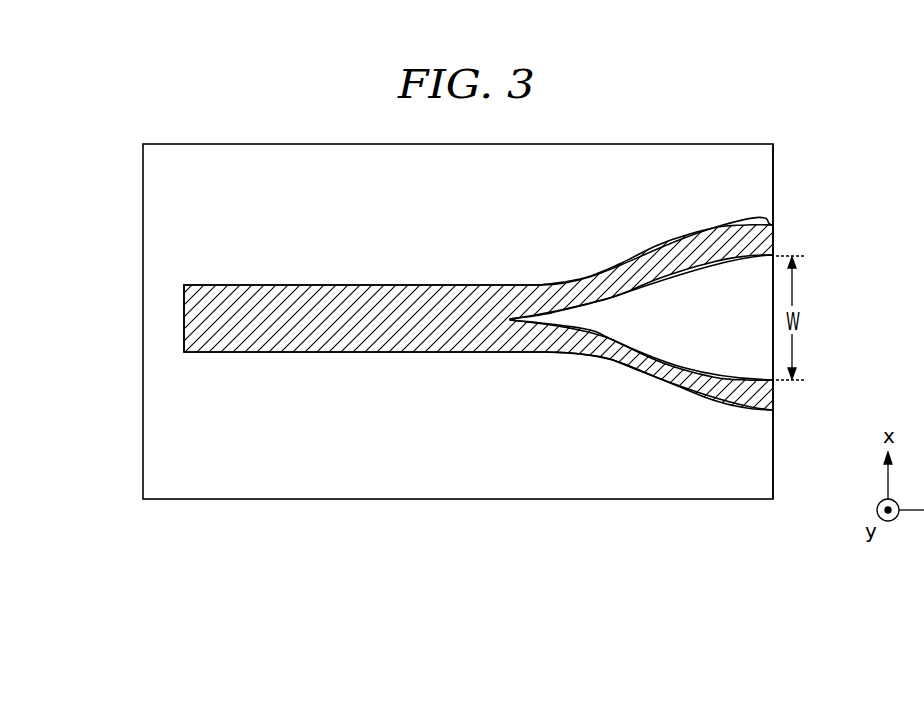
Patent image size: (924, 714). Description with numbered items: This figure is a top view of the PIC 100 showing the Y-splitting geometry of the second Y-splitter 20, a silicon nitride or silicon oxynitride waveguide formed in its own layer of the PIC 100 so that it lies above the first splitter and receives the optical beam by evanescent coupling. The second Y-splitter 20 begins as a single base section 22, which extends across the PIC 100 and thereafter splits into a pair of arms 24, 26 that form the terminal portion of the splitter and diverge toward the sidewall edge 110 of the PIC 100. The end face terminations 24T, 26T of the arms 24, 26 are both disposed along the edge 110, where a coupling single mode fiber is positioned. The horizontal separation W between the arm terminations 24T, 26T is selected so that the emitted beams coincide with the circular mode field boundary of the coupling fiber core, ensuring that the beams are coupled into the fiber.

The PIC 100 is at (513, 493).
The sidewall edge 110 is at (775, 165).
The second Y-splitter 20 is at (370, 255).
The base section 22 is at (372, 350).
The arm 24 is at (708, 402).
The arm 26 is at (720, 240).
The end face termination 24T is at (775, 395).
The end face termination 26T is at (775, 240).